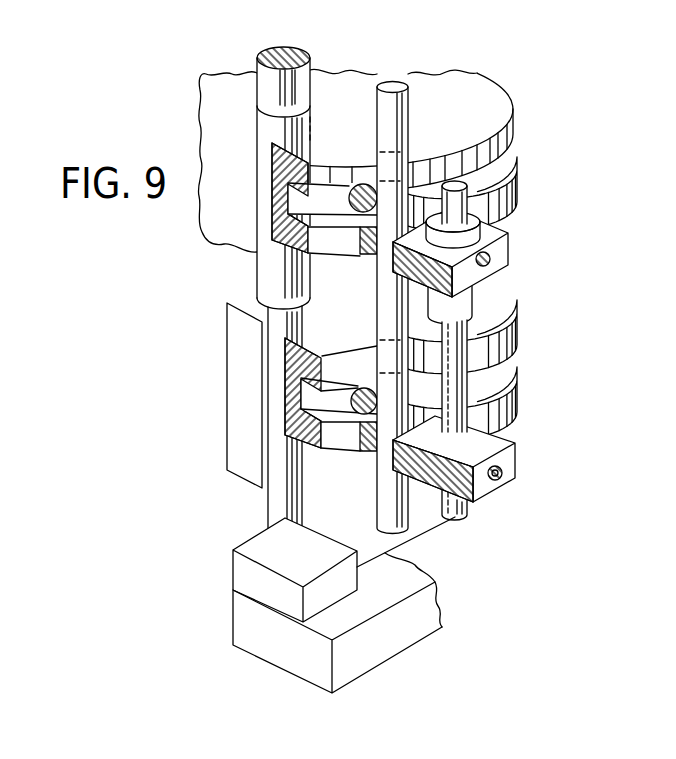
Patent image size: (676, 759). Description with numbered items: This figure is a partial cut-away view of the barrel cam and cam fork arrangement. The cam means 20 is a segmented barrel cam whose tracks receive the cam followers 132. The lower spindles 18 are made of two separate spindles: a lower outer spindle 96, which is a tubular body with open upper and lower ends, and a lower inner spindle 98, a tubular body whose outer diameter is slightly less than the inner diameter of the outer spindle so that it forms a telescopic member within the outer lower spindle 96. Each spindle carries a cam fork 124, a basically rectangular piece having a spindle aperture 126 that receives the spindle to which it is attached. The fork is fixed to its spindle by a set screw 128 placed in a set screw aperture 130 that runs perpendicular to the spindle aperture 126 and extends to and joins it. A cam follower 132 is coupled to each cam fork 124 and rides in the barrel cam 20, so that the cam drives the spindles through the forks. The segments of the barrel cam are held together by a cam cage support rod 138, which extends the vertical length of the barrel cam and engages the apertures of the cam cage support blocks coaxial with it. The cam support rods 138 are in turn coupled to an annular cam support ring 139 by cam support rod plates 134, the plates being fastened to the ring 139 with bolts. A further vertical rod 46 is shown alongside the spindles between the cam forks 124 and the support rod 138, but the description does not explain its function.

The lower spindles 18 is at (483, 299).
The cam means 20 is at (527, 121).
The guide rod 46 is at (393, 110).
The lower outer spindle 96 is at (470, 190).
The lower inner spindle 98 is at (450, 520).
The cam fork 124 is at (497, 266).
The spindle aperture 126 is at (472, 440).
The set screw 128 is at (490, 258).
The set screw aperture 130 is at (493, 487).
The cam follower 132 is at (355, 205).
The cam support rod plates 134 is at (247, 575).
The cam cage support rod 138 is at (297, 52).
The annular cam support ring 139 is at (380, 657).